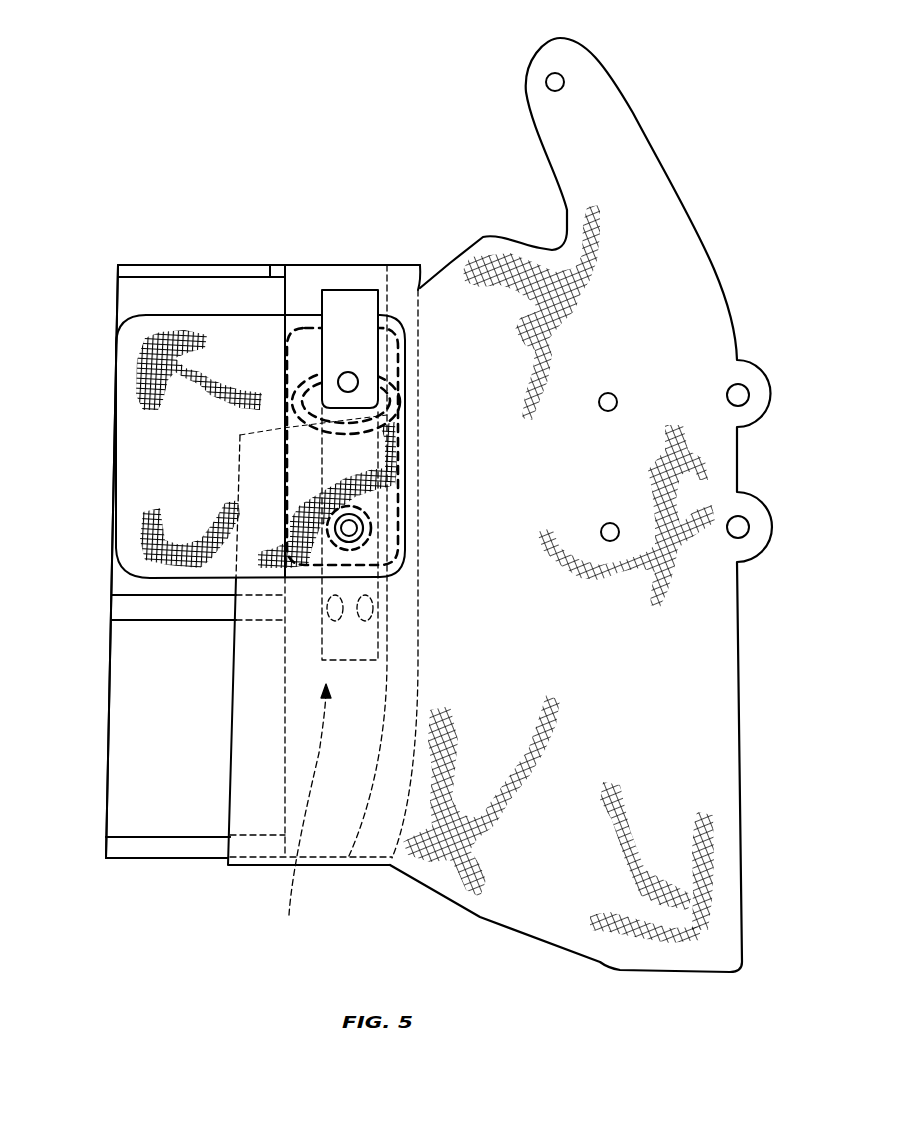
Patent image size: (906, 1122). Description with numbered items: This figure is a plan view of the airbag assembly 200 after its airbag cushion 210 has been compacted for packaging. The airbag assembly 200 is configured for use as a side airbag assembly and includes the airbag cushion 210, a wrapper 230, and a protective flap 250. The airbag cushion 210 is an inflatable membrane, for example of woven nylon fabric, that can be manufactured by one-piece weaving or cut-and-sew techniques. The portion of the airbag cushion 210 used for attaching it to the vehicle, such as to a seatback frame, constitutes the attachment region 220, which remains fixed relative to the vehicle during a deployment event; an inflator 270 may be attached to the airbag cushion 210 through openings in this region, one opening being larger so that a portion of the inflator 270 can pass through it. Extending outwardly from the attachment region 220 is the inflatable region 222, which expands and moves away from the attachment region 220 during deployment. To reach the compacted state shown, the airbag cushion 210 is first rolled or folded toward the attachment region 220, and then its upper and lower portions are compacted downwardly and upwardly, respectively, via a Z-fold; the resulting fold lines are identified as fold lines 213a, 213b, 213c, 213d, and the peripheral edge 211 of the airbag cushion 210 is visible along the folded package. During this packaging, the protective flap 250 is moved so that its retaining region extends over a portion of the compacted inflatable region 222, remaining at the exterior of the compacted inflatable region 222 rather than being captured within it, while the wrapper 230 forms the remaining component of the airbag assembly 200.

The airbag assembly 200 is at (167, 142).
The airbag cushion 210 is at (148, 705).
The peripheral edge 211 is at (214, 277).
The fold line 213a is at (182, 265).
The fold line 213b is at (146, 596).
The fold line 213c is at (132, 620).
The fold line 213d is at (173, 863).
The attachment region 220 is at (303, 816).
The inflatable region 222 is at (98, 568).
The wrapper 230 is at (625, 202).
The protective flap 250 is at (258, 332).
The inflator 270 is at (343, 312).